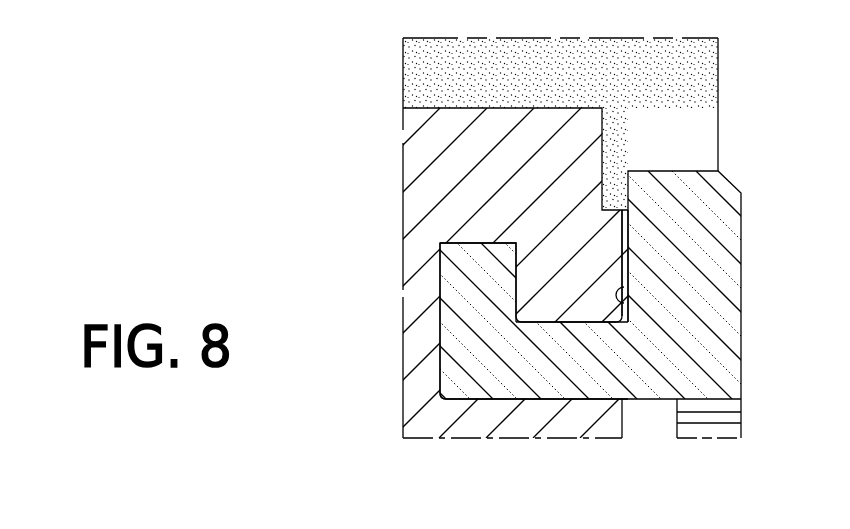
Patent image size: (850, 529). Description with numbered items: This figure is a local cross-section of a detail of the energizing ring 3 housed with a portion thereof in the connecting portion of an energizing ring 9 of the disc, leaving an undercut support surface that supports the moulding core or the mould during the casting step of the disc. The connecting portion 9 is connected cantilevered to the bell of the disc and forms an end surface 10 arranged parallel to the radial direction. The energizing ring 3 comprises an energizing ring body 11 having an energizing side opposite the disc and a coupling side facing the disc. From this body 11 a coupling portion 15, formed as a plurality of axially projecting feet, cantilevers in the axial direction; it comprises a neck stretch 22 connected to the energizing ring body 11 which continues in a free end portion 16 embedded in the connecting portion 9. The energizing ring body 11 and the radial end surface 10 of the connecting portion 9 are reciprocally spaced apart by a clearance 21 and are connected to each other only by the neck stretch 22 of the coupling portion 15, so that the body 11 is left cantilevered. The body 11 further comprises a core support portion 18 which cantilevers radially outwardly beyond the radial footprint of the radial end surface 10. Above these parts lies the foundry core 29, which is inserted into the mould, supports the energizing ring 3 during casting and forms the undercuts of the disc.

The energizing ring 3 is at (707, 340).
The connecting portion of an energizing ring 9 is at (453, 203).
The end surface 10 is at (623, 300).
The energizing ring body 11 is at (697, 380).
The coupling portion 15 is at (532, 377).
The free end portion 16 is at (470, 362).
The core support portion 18 is at (618, 183).
The clearance 21 is at (623, 232).
The neck stretch 22 is at (618, 357).
The foundry core 29 is at (667, 92).